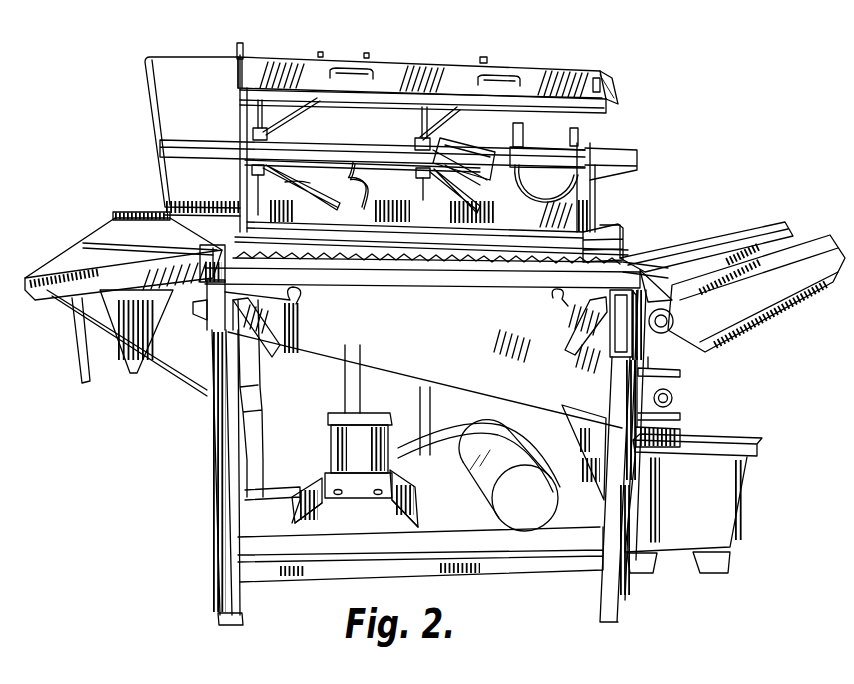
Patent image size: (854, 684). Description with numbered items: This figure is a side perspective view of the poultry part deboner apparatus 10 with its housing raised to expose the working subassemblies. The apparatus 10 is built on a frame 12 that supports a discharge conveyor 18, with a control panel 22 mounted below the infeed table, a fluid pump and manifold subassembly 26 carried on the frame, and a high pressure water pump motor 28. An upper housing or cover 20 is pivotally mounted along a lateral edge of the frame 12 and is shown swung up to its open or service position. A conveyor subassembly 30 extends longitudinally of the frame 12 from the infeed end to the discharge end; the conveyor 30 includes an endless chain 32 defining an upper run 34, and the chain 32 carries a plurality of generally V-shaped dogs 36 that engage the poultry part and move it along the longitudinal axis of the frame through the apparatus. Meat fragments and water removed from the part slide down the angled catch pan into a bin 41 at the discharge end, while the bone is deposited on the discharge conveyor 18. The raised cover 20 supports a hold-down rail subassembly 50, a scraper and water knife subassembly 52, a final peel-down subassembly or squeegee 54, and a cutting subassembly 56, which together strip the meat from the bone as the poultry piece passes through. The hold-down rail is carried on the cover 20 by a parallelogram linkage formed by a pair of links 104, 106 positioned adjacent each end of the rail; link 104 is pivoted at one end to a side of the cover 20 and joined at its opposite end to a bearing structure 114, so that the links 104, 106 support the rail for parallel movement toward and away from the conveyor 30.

The poultry part deboner apparatus 10 is at (730, 118).
The frame 12 is at (645, 391).
The discharge conveyor 18 is at (806, 202).
The upper housing or cover 20 is at (573, 70).
The control panel 22 is at (77, 365).
The fluid pump and manifold subassembly 26 is at (365, 405).
The high pressure water pump motor 28 is at (522, 517).
The conveyor subassembly 30 is at (638, 250).
The endless chain 32 is at (230, 243).
The upper run 34 is at (350, 255).
The V-shaped dogs 36 is at (477, 264).
The bin 41 is at (723, 427).
The hold-down rail subassembly 50 is at (236, 130).
The scraper and water knife subassembly 52 is at (355, 123).
The final peel-down subassembly or squeegee 54 is at (473, 135).
The cutting subassembly 56 is at (556, 133).
The link 104 is at (263, 128).
The link 106 is at (285, 182).
The bearing structure 114 is at (267, 135).